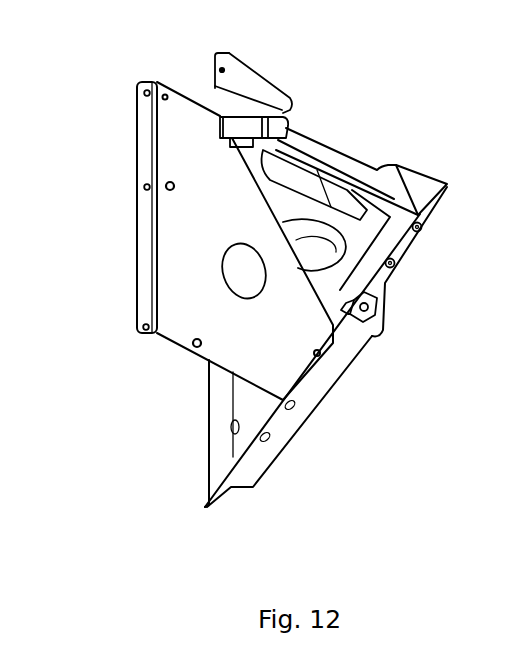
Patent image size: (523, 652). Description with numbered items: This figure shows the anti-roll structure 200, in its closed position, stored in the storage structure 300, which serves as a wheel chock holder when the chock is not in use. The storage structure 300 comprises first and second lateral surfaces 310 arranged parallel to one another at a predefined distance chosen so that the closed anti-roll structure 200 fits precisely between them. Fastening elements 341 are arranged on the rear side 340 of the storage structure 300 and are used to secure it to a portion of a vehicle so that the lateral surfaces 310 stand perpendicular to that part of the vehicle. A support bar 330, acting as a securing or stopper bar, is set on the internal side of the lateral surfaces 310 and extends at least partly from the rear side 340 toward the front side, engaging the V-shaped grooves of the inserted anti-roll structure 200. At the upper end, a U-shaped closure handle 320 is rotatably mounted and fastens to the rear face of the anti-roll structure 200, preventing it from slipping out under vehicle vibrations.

The anti-roll structure 200 is at (443, 167).
The storage structure 300 is at (70, 232).
The lateral surface 310 is at (383, 323).
The closure handle 320 is at (293, 97).
The support bar 330 is at (377, 330).
The rear side 340 is at (133, 255).
The fastening elements 341 is at (150, 88).